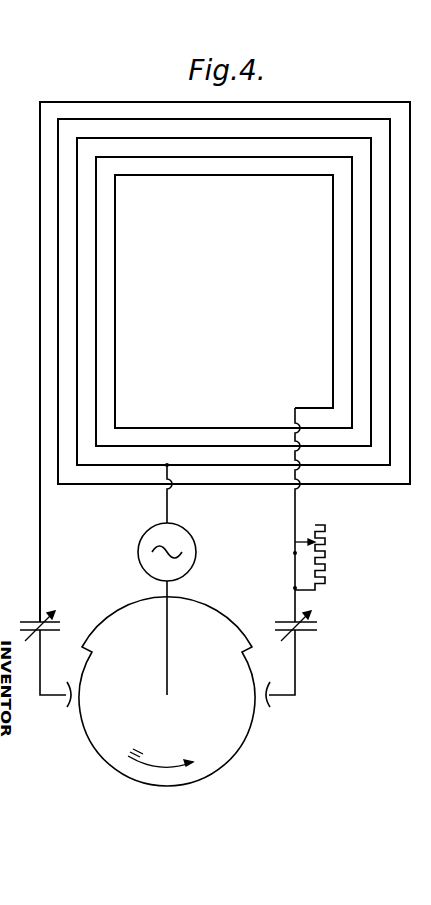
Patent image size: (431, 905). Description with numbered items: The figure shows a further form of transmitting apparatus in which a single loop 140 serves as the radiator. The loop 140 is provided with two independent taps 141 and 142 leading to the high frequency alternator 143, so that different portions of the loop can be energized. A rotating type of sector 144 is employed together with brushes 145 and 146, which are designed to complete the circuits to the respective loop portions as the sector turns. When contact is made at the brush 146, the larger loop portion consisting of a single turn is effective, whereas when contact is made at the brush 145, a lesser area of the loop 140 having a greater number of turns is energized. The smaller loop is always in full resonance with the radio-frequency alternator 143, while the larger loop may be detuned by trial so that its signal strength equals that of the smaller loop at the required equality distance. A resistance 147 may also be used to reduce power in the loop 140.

The loop 140 is at (40, 313).
The tap 141 is at (296, 498).
The tap 142 is at (41, 560).
The high frequency alternator 143 is at (197, 552).
The rotating sector 144 is at (215, 605).
The brush 145 is at (268, 700).
The brush 146 is at (64, 706).
The resistance 147 is at (328, 571).